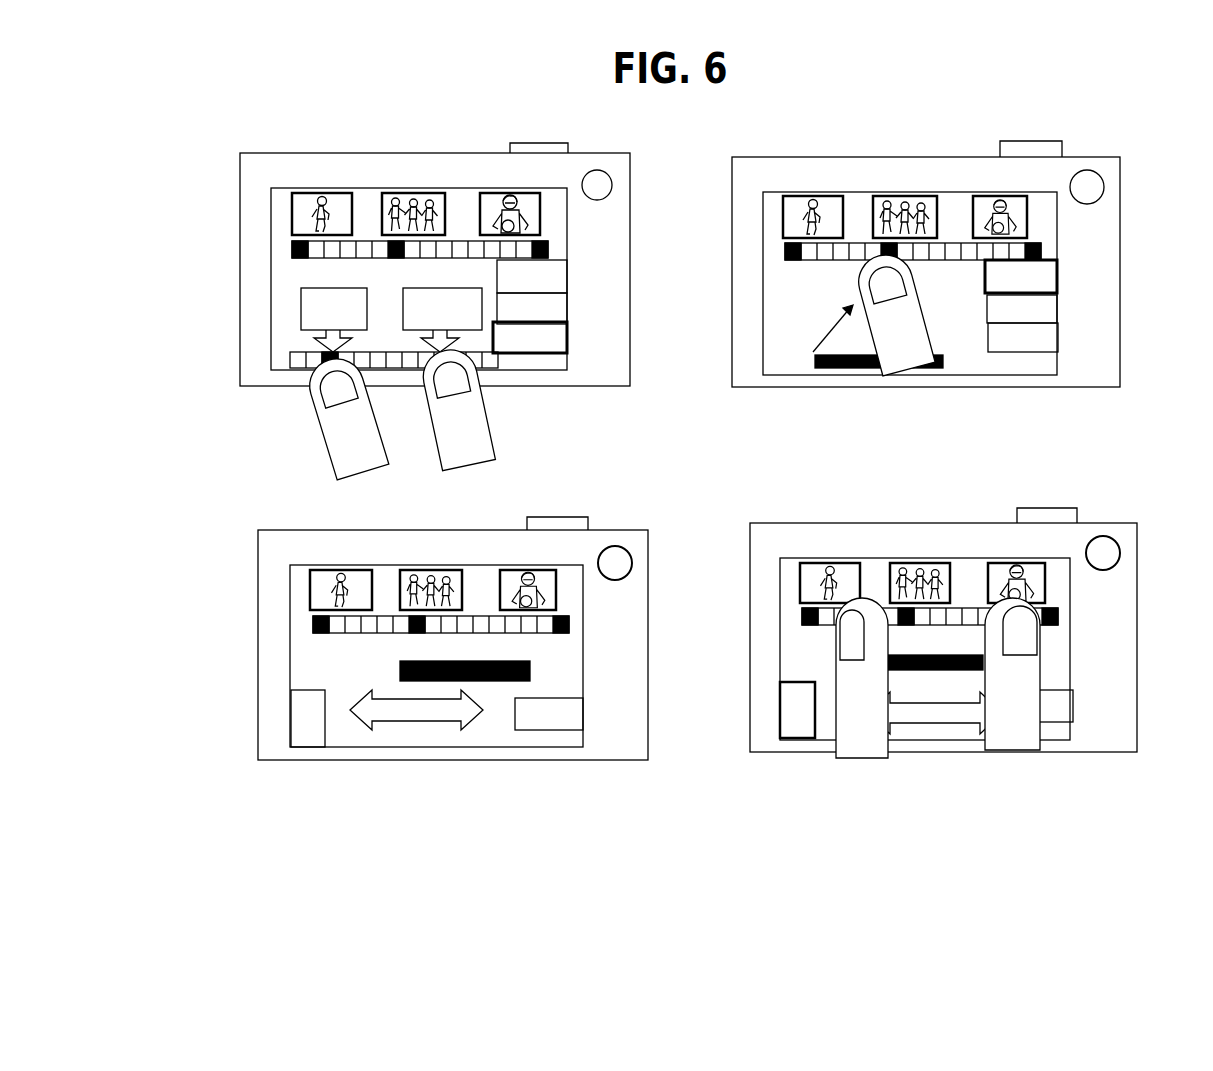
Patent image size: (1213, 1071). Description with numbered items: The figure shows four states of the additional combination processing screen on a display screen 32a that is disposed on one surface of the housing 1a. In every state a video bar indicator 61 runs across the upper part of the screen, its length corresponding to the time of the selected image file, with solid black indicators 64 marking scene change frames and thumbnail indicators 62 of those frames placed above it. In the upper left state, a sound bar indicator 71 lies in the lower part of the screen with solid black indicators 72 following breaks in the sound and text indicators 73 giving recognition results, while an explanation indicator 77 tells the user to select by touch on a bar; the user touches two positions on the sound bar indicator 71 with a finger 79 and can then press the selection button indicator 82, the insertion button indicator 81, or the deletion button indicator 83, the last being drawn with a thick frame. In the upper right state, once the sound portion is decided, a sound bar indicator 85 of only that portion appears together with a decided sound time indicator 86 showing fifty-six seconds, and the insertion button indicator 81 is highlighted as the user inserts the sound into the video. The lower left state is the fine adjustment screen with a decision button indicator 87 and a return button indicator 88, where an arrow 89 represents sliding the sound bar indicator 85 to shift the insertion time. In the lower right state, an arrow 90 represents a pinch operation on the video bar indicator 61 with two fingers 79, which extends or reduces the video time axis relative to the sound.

The housing 1a is at (301, 153).
The display screen 32a is at (285, 188).
The video bar indicator 61 is at (467, 242).
The thumbnail indicator 62 is at (428, 192).
The indicator 64 is at (292, 243).
The sound bar indicator 71 is at (393, 370).
The indicator 72 is at (323, 358).
The text indicator 73 is at (308, 317).
The explanation indicator 77 is at (290, 273).
The finger 79 is at (345, 383).
The insertion button indicator 81 is at (567, 272).
The selection button indicator 82 is at (566, 298).
The deletion button indicator 83 is at (537, 348).
The sound bar indicator 85 is at (812, 362).
The decided sound time indicator 86 is at (770, 321).
The decision button indicator 87 is at (550, 730).
The RETURN button 88 is at (296, 700).
The arrow 89 is at (420, 720).
The arrow 90 is at (936, 724).